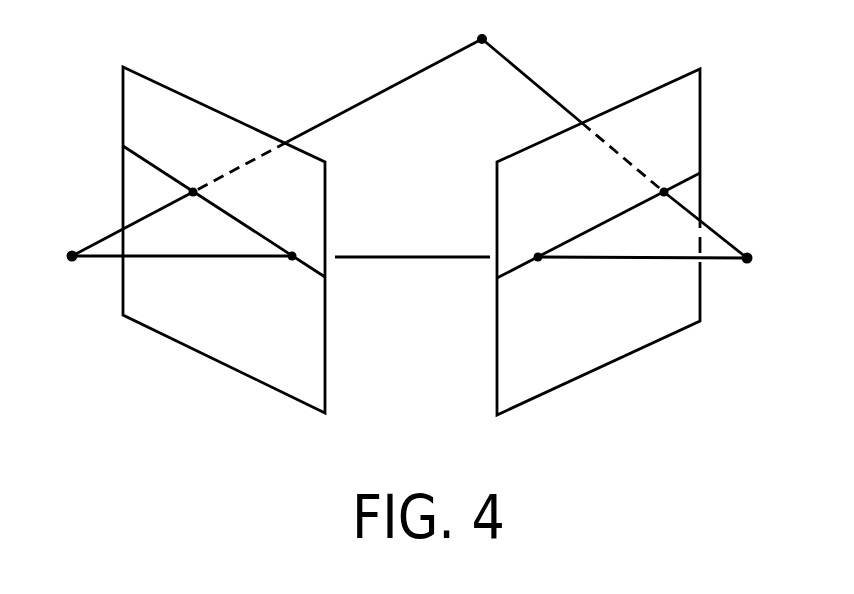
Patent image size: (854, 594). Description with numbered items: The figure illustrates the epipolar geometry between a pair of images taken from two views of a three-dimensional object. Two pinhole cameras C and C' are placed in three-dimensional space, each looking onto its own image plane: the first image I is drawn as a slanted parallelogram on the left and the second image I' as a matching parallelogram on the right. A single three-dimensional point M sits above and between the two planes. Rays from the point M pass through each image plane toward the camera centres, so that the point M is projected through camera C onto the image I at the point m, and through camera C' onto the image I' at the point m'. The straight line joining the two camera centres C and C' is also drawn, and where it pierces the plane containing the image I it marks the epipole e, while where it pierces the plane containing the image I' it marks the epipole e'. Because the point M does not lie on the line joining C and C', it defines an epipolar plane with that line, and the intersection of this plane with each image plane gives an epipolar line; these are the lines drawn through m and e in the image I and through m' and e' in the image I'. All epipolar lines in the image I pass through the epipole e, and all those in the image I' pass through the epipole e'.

The 3D point M is at (428, 96).
The image I is at (224, 240).
The image I' is at (598, 242).
The pinhole camera C is at (169, 242).
The pinhole camera C' is at (658, 243).
The projection of 3D point m is at (224, 211).
The projection of 3D point m' is at (598, 225).
The epipole e is at (285, 269).
The epipole e' is at (538, 269).